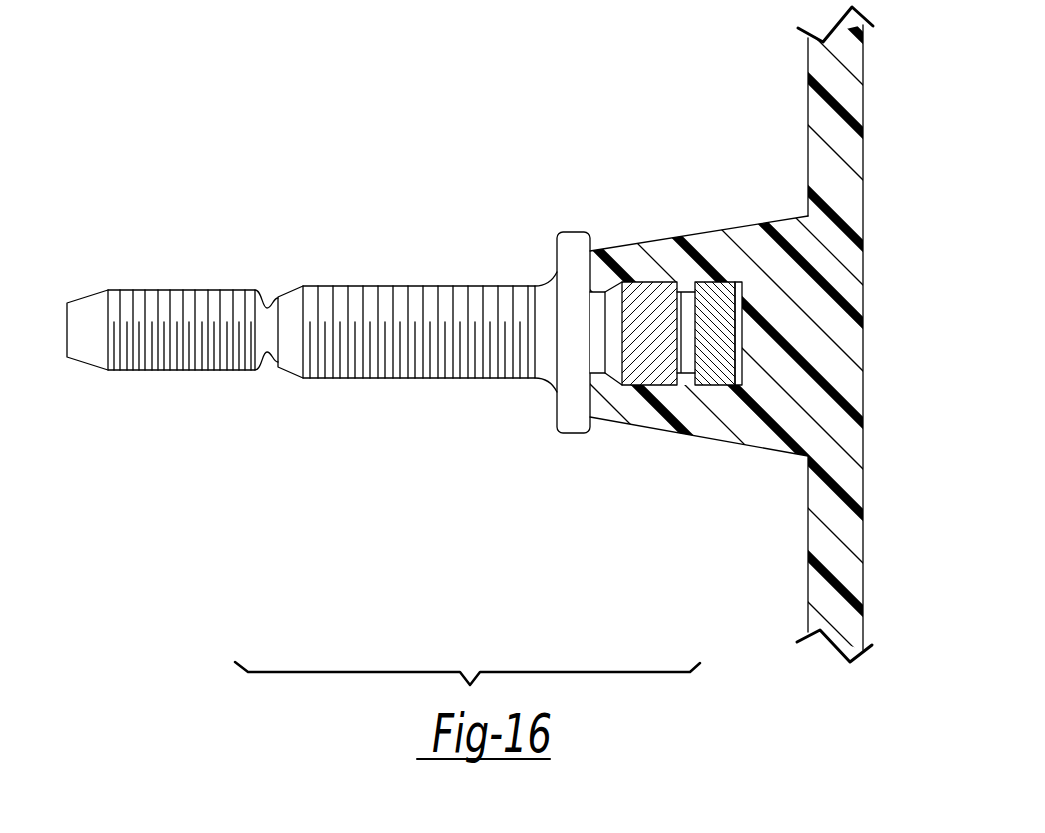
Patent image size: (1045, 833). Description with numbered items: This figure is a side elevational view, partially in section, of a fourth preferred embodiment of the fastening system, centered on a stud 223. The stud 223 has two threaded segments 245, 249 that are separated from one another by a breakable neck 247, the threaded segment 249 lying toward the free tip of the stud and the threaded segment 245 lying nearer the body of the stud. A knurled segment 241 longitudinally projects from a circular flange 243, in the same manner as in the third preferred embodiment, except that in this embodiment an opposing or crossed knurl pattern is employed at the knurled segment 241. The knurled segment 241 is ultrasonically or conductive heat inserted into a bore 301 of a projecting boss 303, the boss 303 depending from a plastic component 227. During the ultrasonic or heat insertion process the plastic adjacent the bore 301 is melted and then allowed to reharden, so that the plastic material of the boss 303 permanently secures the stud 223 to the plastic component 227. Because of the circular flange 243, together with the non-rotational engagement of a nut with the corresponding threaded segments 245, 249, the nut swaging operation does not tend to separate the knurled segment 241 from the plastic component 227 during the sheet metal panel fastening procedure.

The stud 223 is at (333, 182).
The threaded segment 249 is at (170, 318).
The breakable neck 247 is at (272, 342).
The threaded segment 245 is at (436, 327).
The circular flange 243 is at (579, 240).
The knurled segment 241 is at (653, 303).
The bore 301 is at (716, 290).
The projecting boss 303 is at (786, 230).
The plastic component 227 is at (853, 583).